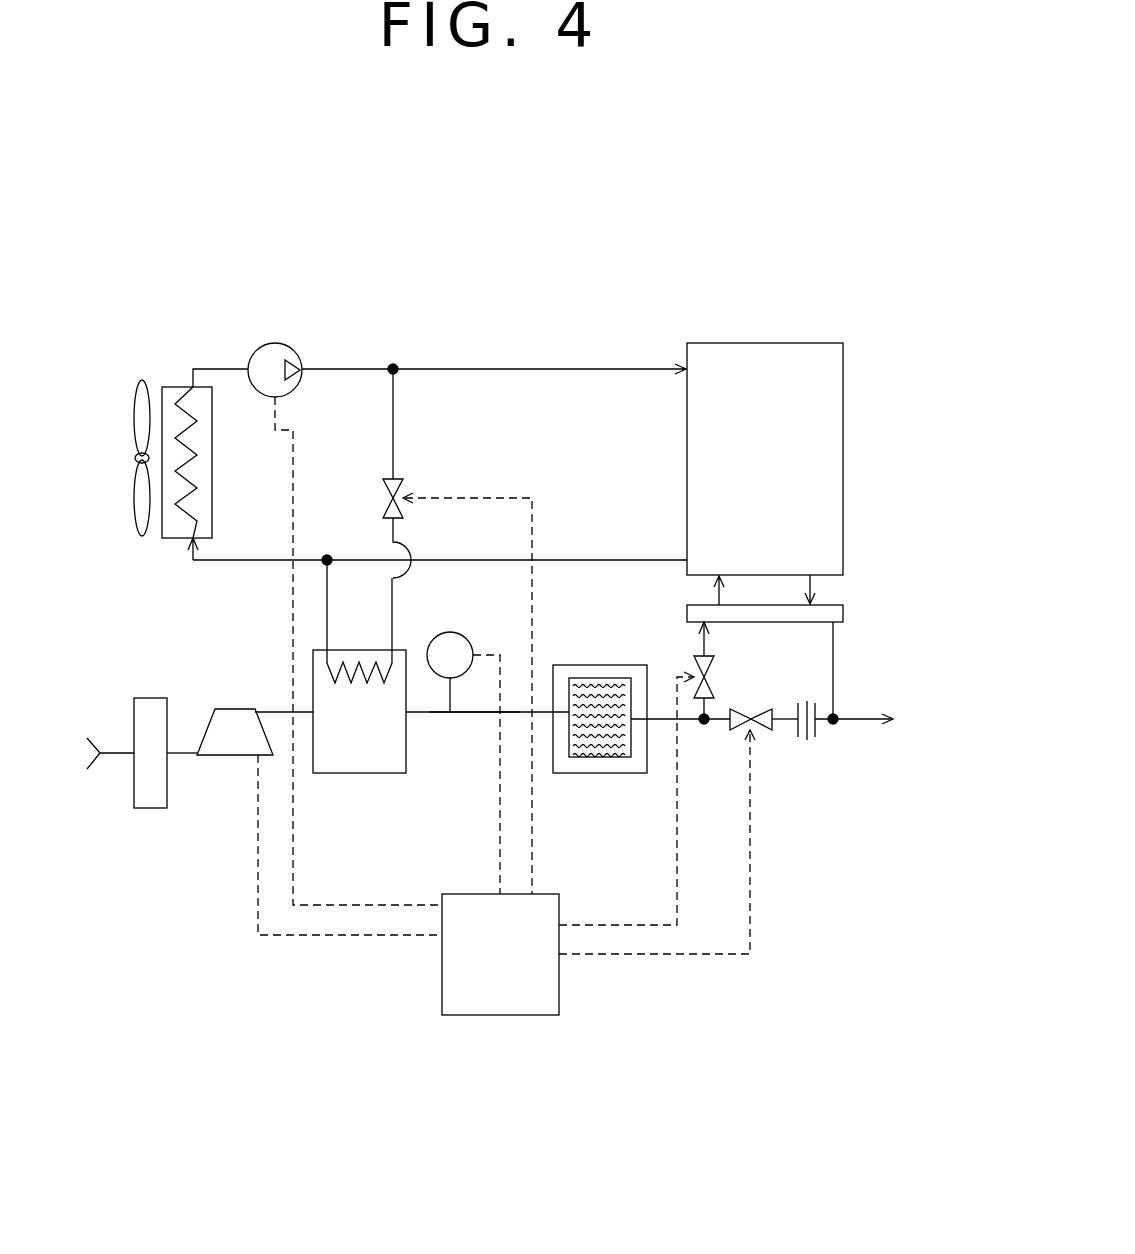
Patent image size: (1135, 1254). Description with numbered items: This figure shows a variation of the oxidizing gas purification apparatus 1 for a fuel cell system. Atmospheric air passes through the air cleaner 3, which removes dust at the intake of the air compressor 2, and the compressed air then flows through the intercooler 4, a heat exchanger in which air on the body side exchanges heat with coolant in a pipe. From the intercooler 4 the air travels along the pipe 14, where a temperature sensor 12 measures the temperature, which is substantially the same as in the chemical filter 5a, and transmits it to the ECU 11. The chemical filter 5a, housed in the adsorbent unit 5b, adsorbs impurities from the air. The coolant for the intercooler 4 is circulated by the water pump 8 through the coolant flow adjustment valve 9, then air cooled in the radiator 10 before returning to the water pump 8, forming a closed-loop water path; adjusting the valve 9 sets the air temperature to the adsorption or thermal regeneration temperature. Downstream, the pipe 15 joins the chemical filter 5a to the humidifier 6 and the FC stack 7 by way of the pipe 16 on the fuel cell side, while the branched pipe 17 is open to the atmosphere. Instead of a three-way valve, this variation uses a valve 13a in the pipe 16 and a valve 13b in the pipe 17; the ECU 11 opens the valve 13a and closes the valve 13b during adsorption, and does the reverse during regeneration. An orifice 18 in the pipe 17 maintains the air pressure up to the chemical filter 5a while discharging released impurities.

The oxidizing gas purification apparatus 1 is at (577, 283).
The air compressor 2 is at (225, 709).
The air cleaner 3 is at (150, 808).
The intercooler 4 is at (323, 773).
The chemical filter 5a is at (598, 735).
The adsorbent unit 5b is at (572, 665).
The humidifier 6 is at (842, 605).
The FC stack 7 is at (727, 343).
The water pump 8 is at (278, 343).
The coolant flow adjustment valve 9 is at (403, 485).
The radiator 10 is at (172, 387).
The ECU 11 is at (530, 1015).
The temperature sensor 12 is at (440, 632).
The valve 13a is at (712, 668).
The valve 13b is at (757, 708).
The pipe 14 is at (470, 712).
The pipe 15 is at (667, 720).
The pipe 16 is at (704, 648).
The branched pipe 17 is at (788, 724).
The orifice 18 is at (822, 733).